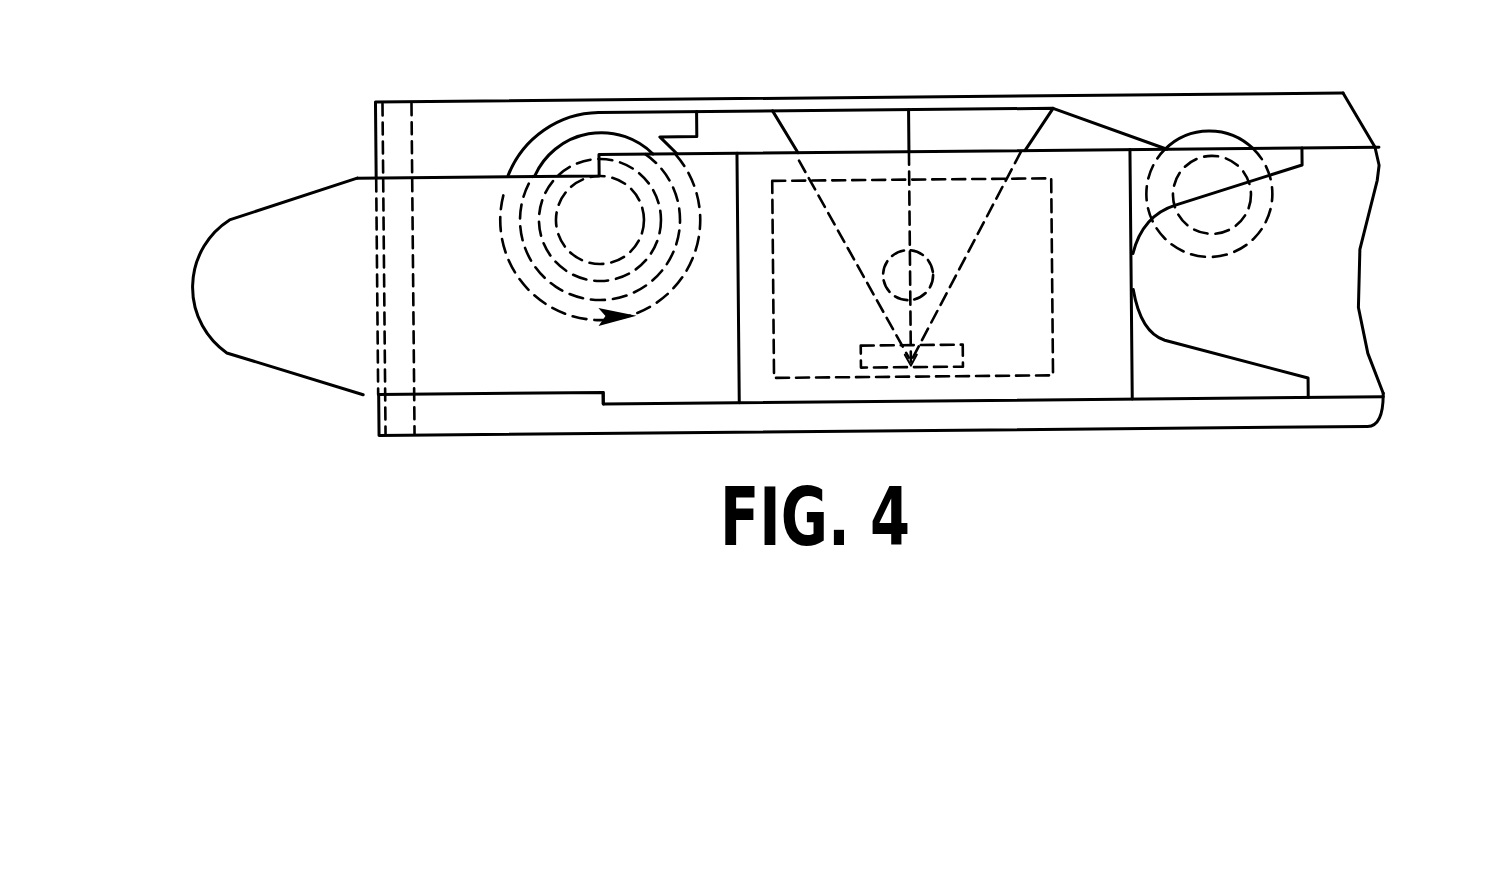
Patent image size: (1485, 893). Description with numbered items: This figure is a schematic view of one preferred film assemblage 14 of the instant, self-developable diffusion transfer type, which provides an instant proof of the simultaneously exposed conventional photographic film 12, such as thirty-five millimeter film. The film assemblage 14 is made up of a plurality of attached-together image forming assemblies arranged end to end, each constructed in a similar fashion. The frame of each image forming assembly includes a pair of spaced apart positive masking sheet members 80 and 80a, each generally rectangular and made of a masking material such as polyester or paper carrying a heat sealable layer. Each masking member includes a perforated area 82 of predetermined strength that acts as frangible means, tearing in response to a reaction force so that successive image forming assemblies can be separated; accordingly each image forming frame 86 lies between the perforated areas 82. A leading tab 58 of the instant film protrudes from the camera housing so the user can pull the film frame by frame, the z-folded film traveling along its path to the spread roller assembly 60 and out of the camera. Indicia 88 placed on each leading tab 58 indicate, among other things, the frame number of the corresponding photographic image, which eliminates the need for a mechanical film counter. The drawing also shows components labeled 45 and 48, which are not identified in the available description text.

The conventional photographic film 12 is at (947, 81).
The instant film assemblage 14 is at (743, 89).
The take-up spool 45 is at (1218, 175).
The film roll 48 is at (616, 134).
The leading tab 58 is at (254, 329).
The spread roller assembly 60 is at (384, 114).
The positive masking sheet member 80 is at (1350, 204).
The positive masking sheet member 80a is at (567, 378).
The perforated area 82 is at (1261, 364).
The image forming frame 86 is at (1022, 343).
The indicia 88 is at (330, 250).